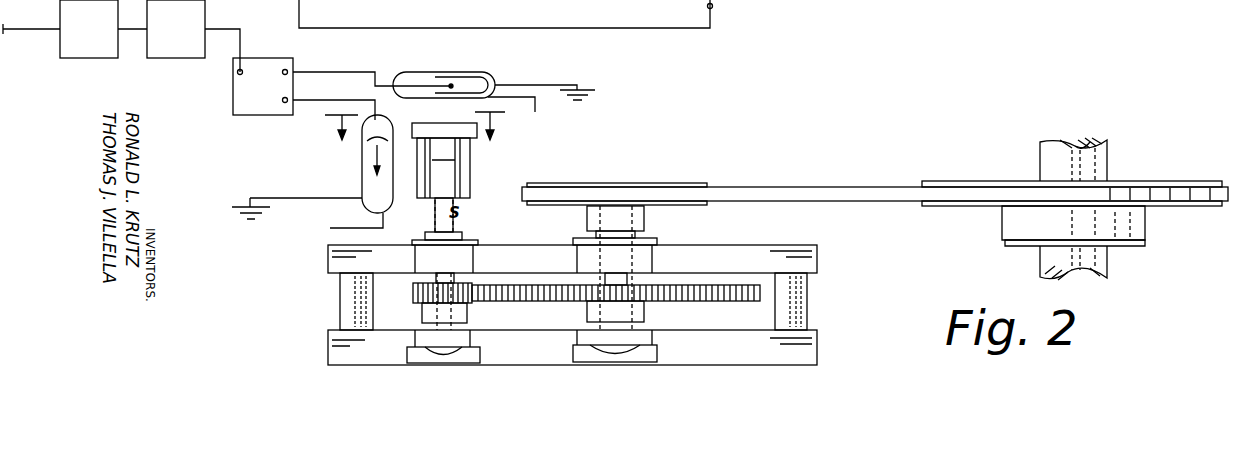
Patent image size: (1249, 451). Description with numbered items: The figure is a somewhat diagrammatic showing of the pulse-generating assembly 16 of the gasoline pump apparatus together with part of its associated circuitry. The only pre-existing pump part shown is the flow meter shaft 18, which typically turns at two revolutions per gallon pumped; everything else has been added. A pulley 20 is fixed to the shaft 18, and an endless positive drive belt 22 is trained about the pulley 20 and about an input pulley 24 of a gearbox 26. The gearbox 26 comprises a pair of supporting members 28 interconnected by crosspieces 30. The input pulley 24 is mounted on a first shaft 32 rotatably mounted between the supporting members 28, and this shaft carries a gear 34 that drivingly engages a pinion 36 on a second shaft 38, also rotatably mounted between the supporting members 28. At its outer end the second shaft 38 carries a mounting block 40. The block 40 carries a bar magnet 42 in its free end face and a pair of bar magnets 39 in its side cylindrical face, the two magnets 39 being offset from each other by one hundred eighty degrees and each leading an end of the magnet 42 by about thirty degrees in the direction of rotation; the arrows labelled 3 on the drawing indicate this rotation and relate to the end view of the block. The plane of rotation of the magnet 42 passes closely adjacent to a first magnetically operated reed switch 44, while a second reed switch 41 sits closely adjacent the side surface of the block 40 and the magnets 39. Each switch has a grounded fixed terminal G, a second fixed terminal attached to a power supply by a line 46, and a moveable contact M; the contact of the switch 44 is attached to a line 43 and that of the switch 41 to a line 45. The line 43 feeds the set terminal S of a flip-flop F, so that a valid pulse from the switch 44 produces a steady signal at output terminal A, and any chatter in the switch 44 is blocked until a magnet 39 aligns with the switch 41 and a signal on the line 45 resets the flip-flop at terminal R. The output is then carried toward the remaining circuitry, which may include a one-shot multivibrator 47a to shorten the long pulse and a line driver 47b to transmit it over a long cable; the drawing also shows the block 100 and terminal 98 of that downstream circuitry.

The pulse-generating assembly 16 is at (798, 171).
The flow meter shaft 18 is at (1040, 160).
The pulley 20 is at (1180, 181).
The endless positive drive belt 22 is at (836, 196).
The input pulley 24 is at (690, 183).
The gearbox 26 is at (817, 350).
The supporting members 28 is at (574, 305).
The crosspieces 30 is at (350, 296).
The first shaft 32 is at (605, 278).
The gear 34 is at (682, 290).
The pinion 36 is at (416, 292).
The second shaft 38 is at (456, 212).
The bar magnets 39 is at (428, 200).
The mounting block 40 is at (40, 28).
The second reed switch 41 is at (360, 170).
The bar magnet 42 is at (441, 120).
The line 43 is at (348, 71).
The first magnetically operated reed switch 44 is at (486, 72).
The line 45 is at (312, 106).
The line 46 is at (522, 96).
The one-shot multivibrator 47a is at (194, 58).
The line driver 47b is at (108, 58).
The terminal 98 is at (706, 6).
The control unit 100 is at (480, 26).
The section arrow 3 is at (417, 176).